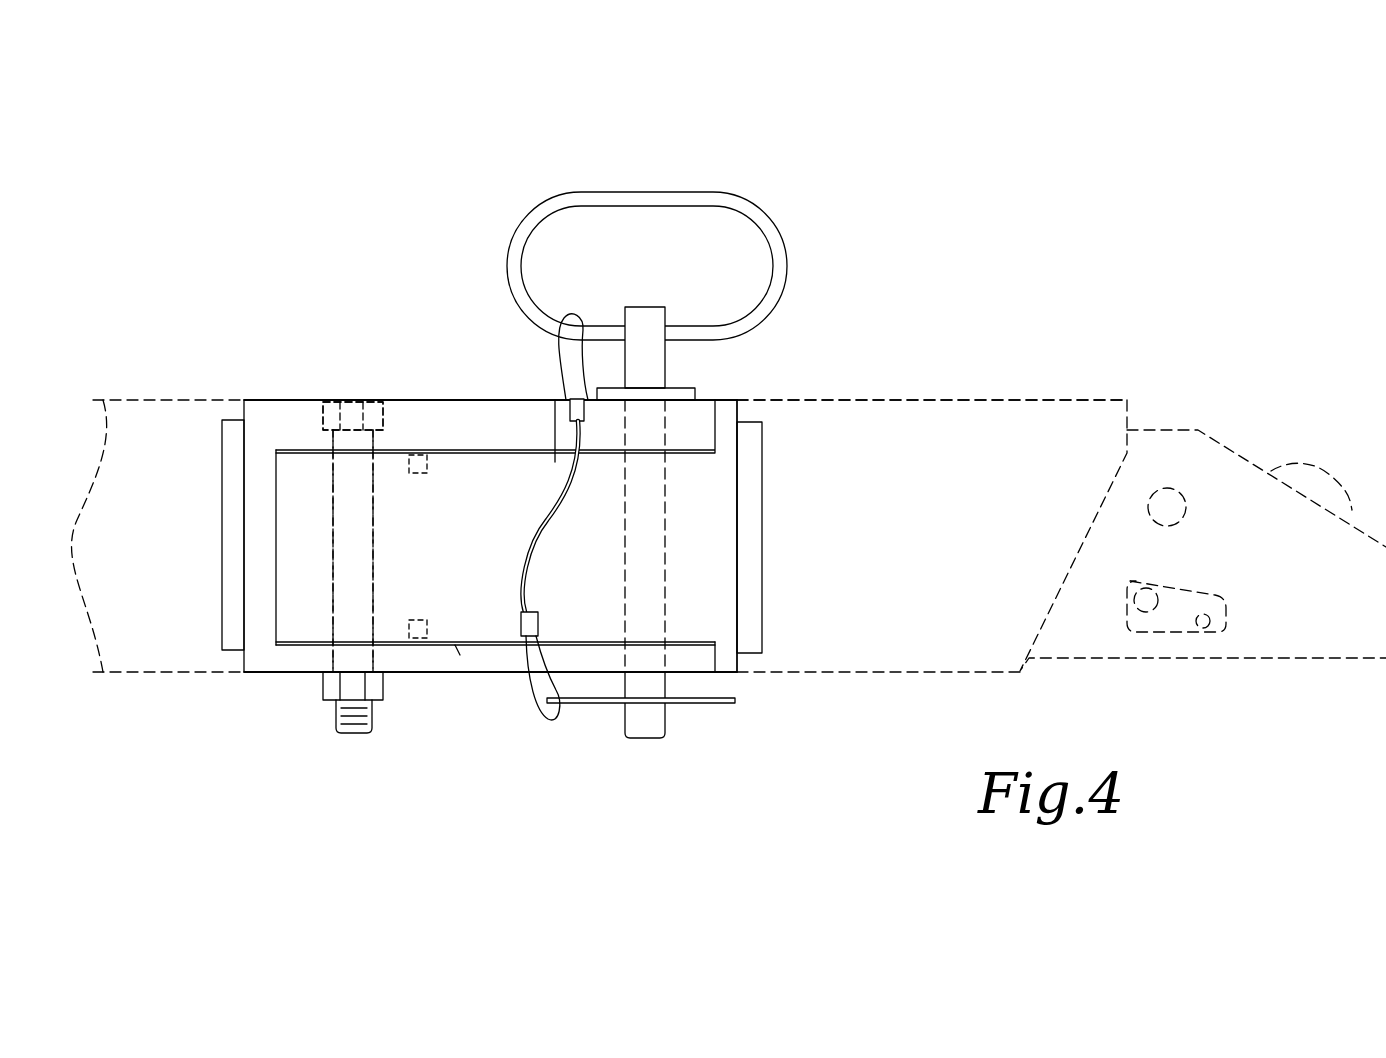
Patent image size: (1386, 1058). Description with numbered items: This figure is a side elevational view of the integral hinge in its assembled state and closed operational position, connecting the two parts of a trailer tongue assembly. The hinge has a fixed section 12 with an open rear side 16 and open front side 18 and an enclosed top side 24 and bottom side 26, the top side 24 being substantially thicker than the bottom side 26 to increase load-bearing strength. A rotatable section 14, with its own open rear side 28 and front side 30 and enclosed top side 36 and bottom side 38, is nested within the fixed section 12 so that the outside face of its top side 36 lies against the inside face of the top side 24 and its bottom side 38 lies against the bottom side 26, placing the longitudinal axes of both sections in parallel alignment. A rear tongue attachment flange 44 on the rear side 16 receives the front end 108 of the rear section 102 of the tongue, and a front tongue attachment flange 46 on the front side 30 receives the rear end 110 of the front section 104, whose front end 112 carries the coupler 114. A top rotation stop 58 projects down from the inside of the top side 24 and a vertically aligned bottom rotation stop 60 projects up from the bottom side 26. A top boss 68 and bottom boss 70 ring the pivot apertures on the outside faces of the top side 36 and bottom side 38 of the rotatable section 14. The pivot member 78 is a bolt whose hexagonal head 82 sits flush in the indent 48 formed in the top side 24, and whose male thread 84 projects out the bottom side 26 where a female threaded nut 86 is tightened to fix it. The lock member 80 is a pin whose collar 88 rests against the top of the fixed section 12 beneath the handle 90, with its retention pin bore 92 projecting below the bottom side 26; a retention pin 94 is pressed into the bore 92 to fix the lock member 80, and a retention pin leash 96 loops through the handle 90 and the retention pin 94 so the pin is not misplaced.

The fixed section 12 is at (518, 400).
The rotatable section 14 is at (290, 610).
The rear side 16 is at (245, 400).
The front side 18 is at (705, 663).
The top side 24 is at (423, 400).
The bottom side 26 is at (430, 675).
The rear side 28 is at (293, 463).
The front side 30 is at (747, 667).
The top side 36 is at (555, 462).
The bottom side 38 is at (455, 645).
The rear tongue attachment flange 44 is at (222, 497).
The front tongue attachment flange 46 is at (765, 440).
The indent 48 is at (357, 398).
The top rotation stop 58 is at (436, 470).
The bottom rotation stop 60 is at (432, 630).
The top boss 68 is at (388, 450).
The bottom boss 70 is at (327, 647).
The pivot member 78 is at (345, 547).
The lock member 80 is at (672, 525).
The head 82 is at (325, 400).
The male thread 84 is at (350, 733).
The female threaded nut 86 is at (372, 692).
The collar 88 is at (685, 387).
The handle 90 is at (672, 198).
The retention pin bore 92 is at (622, 700).
The retention pin 94 is at (693, 710).
The retention pin leash 96 is at (545, 520).
The rear section 102 is at (127, 400).
The front section 104 is at (908, 420).
The front end 108 is at (123, 653).
The rear end 110 is at (855, 418).
The front end 112 is at (1028, 420).
The coupler 114 is at (1228, 462).